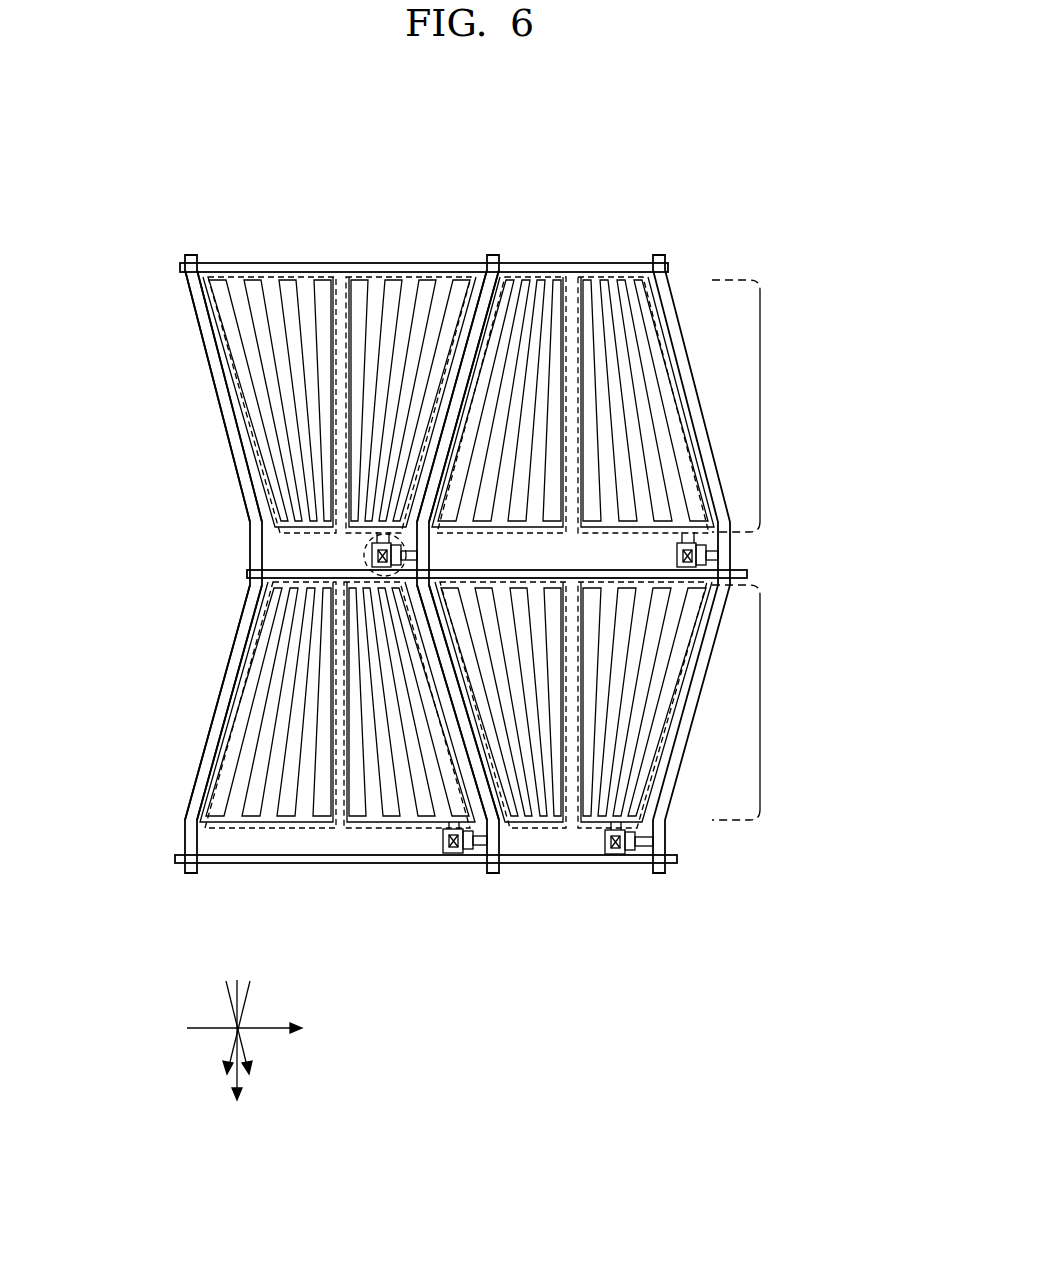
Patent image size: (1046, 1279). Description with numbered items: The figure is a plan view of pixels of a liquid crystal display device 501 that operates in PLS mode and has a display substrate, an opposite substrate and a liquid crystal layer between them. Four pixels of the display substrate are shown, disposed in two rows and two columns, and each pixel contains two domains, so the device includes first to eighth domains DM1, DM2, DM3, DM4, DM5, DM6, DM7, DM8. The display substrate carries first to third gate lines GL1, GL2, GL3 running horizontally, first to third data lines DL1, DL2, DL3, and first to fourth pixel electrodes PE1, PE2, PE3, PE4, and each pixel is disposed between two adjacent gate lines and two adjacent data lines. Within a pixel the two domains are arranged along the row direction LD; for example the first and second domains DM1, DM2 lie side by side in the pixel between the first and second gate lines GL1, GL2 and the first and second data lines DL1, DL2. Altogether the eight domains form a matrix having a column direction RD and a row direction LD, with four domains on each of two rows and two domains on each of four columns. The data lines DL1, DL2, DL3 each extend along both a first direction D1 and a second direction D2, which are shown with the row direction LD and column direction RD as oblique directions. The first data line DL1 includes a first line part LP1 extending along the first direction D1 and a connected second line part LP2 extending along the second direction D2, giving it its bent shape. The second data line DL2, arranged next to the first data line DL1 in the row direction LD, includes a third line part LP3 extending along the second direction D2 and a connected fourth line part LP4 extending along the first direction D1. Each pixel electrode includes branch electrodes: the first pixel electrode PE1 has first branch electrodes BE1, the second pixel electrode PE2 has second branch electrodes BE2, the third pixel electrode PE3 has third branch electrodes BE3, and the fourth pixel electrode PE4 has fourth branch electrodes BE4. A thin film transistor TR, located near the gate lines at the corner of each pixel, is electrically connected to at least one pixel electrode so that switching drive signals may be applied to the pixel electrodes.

The liquid crystal display device 501 is at (743, 180).
The first gate line GL1 is at (668, 268).
The second gate line GL2 is at (747, 575).
The third gate line GL3 is at (677, 860).
The first data line DL1 is at (190, 875).
The second data line DL2 is at (492, 875).
The third data line DL3 is at (665, 840).
The first line part LP1 is at (250, 490).
The second line part LP2 is at (243, 628).
The third line part LP3 is at (477, 322).
The fourth line part LP4 is at (487, 806).
The first pixel electrode PE1 is at (473, 212).
The second pixel electrode PE2 is at (148, 695).
The third pixel electrode PE3 is at (633, 212).
The fourth pixel electrode PE4 is at (640, 965).
The first branch electrodes BE1 is at (400, 286).
The second branch electrodes BE2 is at (270, 703).
The third branch electrodes BE3 is at (560, 286).
The fourth branch electrodes BE4 is at (553, 806).
The first domain DM1 is at (257, 458).
The second domain DM2 is at (352, 277).
The third domain DM3 is at (248, 660).
The fourth domain DM4 is at (355, 828).
The fifth domain DM5 is at (518, 277).
The sixth domain DM6 is at (649, 277).
The seventh domain DM7 is at (528, 823).
The eighth domain DM8 is at (637, 823).
The thin film transistor TR is at (372, 548).
The row direction LD is at (256, 1028).
The column direction RD is at (242, 1086).
The first direction D1 is at (245, 1058).
The second direction D2 is at (232, 1058).